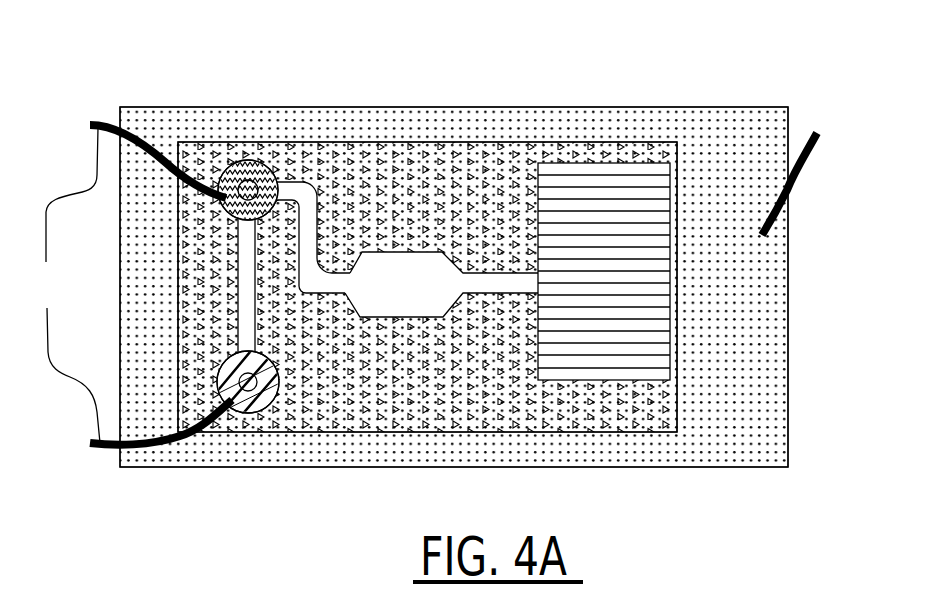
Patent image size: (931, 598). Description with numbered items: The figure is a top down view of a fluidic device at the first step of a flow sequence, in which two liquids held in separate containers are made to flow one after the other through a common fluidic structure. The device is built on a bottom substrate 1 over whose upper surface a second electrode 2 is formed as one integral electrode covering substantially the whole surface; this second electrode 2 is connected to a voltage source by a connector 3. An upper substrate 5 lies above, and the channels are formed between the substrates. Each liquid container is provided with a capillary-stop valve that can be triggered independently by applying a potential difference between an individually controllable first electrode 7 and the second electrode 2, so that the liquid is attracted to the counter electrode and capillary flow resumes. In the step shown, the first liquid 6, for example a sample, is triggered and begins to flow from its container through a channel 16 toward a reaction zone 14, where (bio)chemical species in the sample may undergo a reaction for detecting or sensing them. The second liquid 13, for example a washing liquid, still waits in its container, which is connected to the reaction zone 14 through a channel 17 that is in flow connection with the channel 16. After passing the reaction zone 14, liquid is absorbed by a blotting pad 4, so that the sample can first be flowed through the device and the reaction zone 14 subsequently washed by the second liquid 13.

The bottom substrate 1 is at (727, 121).
The second electrode 2 is at (454, 287).
The connector 3 is at (810, 148).
The blotting pad 4 is at (603, 175).
The upper substrate 5 is at (410, 177).
The first liquid 6 is at (258, 158).
The first electrode 7 is at (136, 285).
The second liquid 13 is at (278, 410).
The reaction zone 14 is at (422, 265).
The channel 16 is at (297, 200).
The channel 17 is at (247, 270).